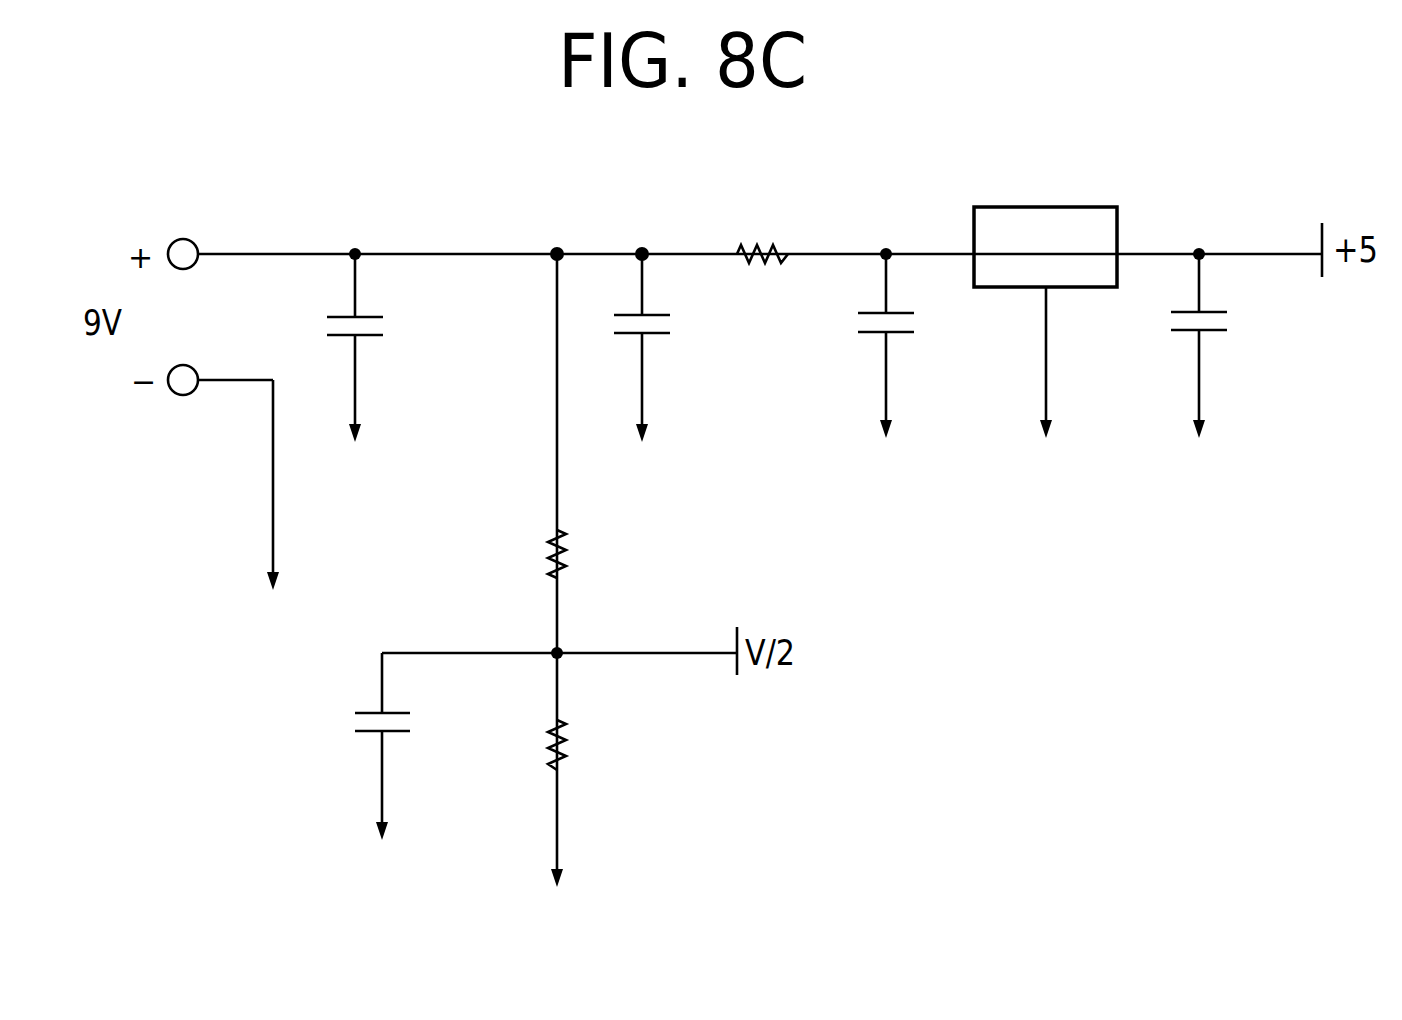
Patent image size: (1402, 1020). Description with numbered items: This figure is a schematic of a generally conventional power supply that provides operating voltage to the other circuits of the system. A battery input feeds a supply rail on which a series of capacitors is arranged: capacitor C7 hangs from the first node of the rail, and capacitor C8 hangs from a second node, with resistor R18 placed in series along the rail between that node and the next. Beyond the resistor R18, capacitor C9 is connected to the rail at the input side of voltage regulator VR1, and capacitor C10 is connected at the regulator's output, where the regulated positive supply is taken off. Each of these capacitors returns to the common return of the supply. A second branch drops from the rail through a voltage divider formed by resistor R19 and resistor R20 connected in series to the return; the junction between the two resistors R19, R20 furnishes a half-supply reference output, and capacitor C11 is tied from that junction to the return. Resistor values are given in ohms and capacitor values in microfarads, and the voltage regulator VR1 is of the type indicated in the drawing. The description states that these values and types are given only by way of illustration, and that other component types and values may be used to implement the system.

The capacitor C7 is at (410, 348).
The capacitor C8 is at (705, 348).
The capacitor C9 is at (898, 321).
The capacitor C10 is at (1220, 320).
The capacitor C11 is at (340, 746).
The resistor R18 is at (766, 252).
The resistor R19 is at (599, 552).
The resistor R20 is at (599, 750).
The voltage regulator VR1 is at (1045, 301).